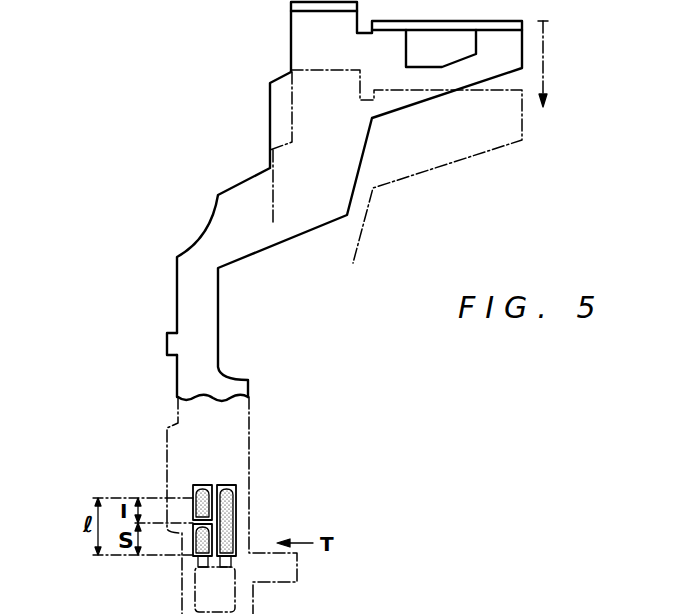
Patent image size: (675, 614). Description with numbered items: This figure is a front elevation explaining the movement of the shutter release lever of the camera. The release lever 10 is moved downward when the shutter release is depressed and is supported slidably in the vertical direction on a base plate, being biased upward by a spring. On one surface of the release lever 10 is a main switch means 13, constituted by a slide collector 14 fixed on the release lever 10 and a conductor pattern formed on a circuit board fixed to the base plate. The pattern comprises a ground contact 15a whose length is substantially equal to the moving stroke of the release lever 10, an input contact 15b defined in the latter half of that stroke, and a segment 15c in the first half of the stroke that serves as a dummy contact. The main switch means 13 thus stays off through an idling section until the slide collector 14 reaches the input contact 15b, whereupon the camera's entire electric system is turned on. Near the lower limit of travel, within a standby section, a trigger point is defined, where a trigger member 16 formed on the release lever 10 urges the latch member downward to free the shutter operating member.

The release lever 10 is at (230, 207).
The trigger member 16 is at (168, 347).
The main switch means 13 is at (223, 476).
The ground contact 15a is at (235, 517).
The input contact 15b is at (197, 540).
The dummy contact 15c is at (202, 485).
The slide collector 14 is at (237, 562).